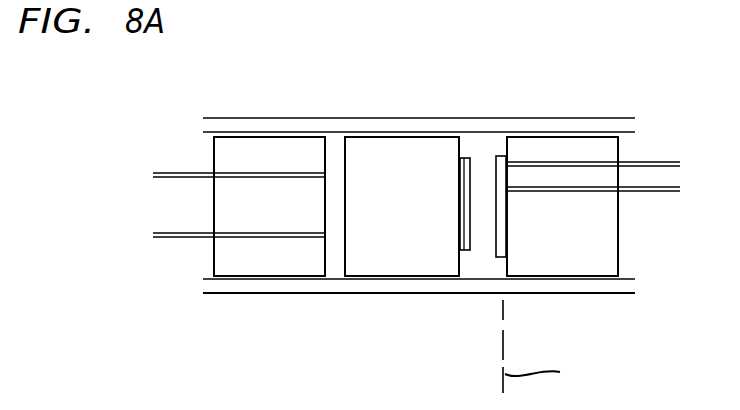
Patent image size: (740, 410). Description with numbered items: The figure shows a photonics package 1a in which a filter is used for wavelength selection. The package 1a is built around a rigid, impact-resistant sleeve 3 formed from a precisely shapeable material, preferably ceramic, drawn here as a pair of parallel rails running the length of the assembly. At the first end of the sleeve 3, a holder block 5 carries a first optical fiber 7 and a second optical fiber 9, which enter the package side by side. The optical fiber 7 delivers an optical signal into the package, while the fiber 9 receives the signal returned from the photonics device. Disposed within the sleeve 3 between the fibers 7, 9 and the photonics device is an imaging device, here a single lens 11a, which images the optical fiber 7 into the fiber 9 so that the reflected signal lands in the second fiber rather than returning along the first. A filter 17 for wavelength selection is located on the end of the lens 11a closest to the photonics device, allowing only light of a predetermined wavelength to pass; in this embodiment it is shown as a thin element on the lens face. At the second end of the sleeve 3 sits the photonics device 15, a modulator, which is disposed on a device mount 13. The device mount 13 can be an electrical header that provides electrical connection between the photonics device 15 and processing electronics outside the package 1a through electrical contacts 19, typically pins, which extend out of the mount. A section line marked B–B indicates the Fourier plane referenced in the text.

The photonics package 1a is at (590, 57).
The sleeve 3 is at (492, 132).
The fiber holder 5 is at (252, 147).
The first optical fiber 7 is at (163, 172).
The second optical fiber 9 is at (165, 233).
The lens 11a is at (383, 143).
The device mount 13 is at (608, 236).
The photonics device 15 is at (500, 257).
The filter 17 is at (465, 158).
The electrical contacts 19 is at (668, 162).